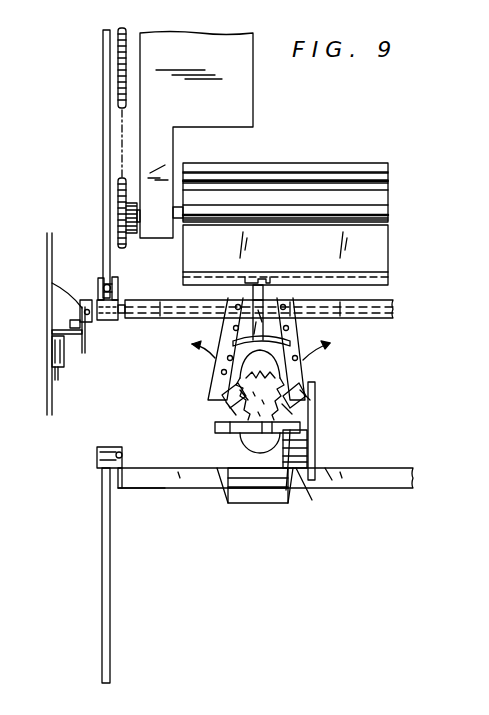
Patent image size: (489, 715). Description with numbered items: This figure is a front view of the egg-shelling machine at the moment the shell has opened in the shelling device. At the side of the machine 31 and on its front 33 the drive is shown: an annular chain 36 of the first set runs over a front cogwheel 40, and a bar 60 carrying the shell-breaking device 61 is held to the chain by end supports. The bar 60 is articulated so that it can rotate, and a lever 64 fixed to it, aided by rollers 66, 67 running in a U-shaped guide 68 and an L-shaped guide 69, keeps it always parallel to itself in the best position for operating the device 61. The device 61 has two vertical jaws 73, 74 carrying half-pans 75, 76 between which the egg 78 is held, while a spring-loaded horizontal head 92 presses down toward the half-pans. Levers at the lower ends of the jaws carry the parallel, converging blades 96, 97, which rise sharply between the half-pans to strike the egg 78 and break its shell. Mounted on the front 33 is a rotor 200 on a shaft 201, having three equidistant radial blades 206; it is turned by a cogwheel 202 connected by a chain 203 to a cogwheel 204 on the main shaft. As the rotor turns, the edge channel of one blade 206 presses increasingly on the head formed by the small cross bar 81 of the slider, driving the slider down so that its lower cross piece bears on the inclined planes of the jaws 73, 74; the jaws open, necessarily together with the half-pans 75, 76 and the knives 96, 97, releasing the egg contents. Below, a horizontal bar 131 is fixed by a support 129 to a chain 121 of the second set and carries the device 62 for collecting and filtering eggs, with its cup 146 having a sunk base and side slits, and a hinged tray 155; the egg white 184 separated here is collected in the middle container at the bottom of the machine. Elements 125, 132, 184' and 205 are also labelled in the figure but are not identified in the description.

The side of the machine 31 is at (49, 262).
The front of the machine 33 is at (222, 92).
The annular chain 36 is at (100, 284).
The front cogwheel 40 is at (106, 133).
The bar 60 is at (386, 316).
The device for breaking egg shells 61 is at (322, 365).
The device for collecting and filtering eggs 62 is at (107, 321).
The lever 64 is at (52, 284).
The roller 66 is at (52, 360).
The roller 67 is at (80, 333).
The U-shaped guide 68 is at (58, 378).
The L-shaped guide 69 is at (80, 315).
The vertical jaw 73 is at (230, 352).
The vertical jaw 74 is at (300, 336).
The half-pan 75 is at (232, 394).
The half-pan 76 is at (292, 408).
The egg 78 is at (240, 368).
The cross bar 81 is at (270, 273).
The horizontal head 92 is at (252, 330).
The blade 96 is at (230, 428).
The blade 97 is at (300, 450).
The chain 121 is at (97, 457).
The lower support post 125 is at (102, 556).
The support 129 is at (132, 490).
The horizontal bar 131 is at (398, 480).
The guide 132 is at (330, 470).
The cup 146 is at (248, 497).
The tray 155 is at (218, 480).
The egg white 184 is at (319, 495).
The blade path 184' is at (323, 507).
The rotor 200 is at (375, 160).
The shaft 201 is at (386, 216).
The cogwheel 202 is at (122, 196).
The chain 203 is at (122, 155).
The cogwheel 204 is at (120, 86).
The belt 205 is at (162, 205).
The radial blade 206 is at (385, 195).